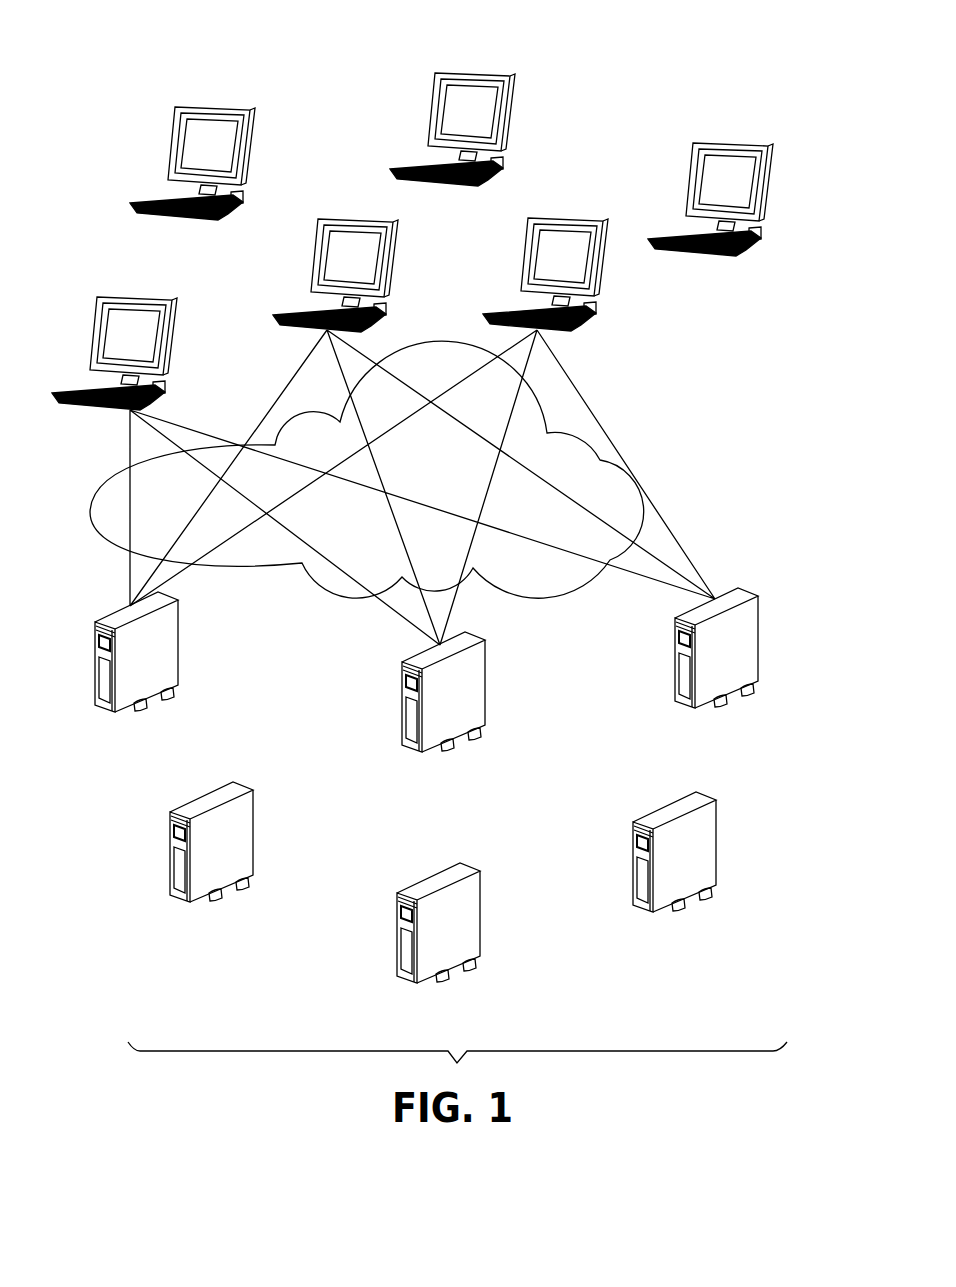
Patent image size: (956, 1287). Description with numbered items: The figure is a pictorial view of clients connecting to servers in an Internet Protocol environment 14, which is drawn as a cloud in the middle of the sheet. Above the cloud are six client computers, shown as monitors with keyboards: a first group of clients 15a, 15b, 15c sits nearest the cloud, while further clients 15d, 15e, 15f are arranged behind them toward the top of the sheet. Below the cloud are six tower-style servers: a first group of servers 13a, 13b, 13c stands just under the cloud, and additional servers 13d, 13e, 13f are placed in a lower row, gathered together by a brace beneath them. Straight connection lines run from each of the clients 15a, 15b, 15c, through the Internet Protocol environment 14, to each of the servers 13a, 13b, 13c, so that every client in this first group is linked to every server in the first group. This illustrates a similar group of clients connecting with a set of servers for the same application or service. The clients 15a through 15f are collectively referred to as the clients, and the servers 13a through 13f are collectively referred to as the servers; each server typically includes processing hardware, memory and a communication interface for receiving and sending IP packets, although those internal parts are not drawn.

The server 13a is at (98, 707).
The server 13b is at (405, 747).
The server 13c is at (678, 703).
The server 13d is at (174, 897).
The server 13e is at (401, 978).
The server 13f is at (637, 907).
The Internet Protocol environment 14 is at (105, 478).
The client 15a is at (126, 294).
The client 15b is at (343, 217).
The client 15c is at (549, 216).
The client 15d is at (208, 105).
The client 15e is at (468, 72).
The client 15f is at (713, 142).